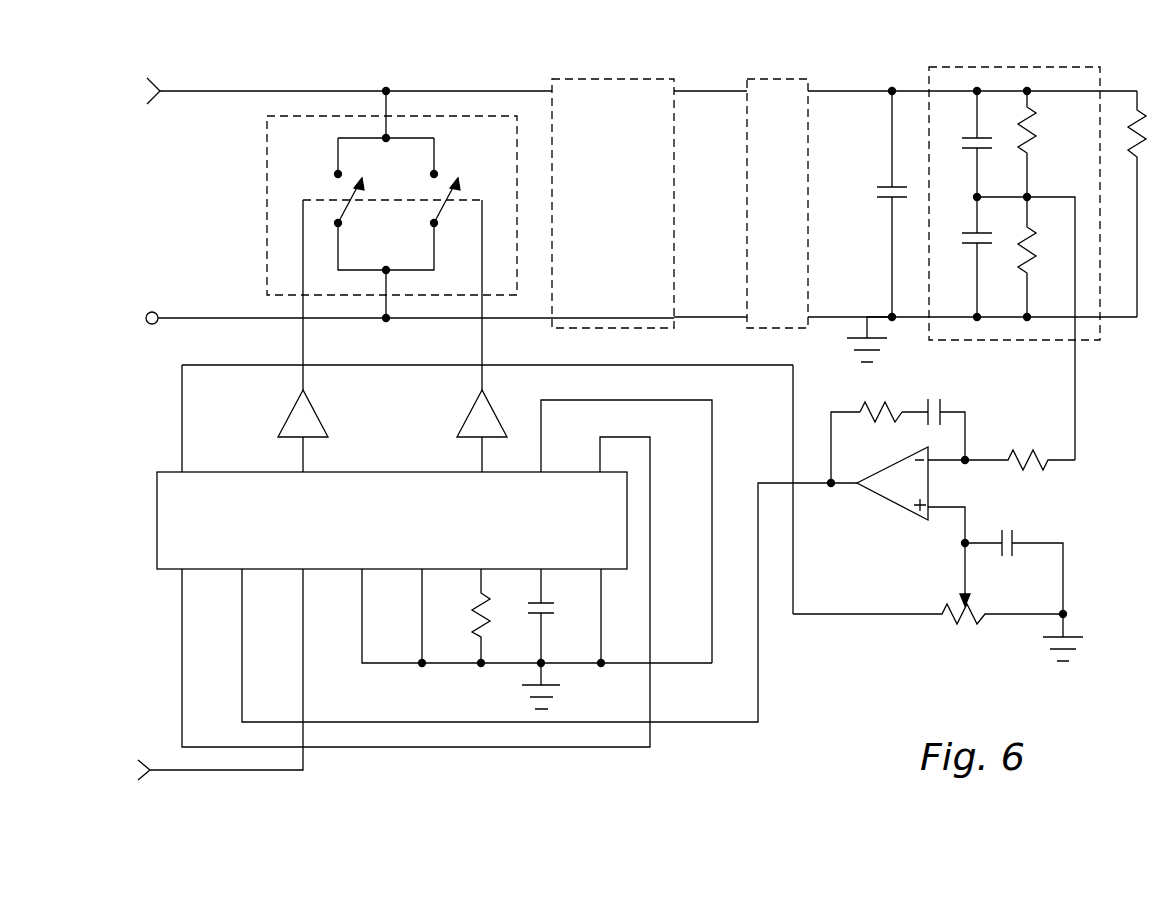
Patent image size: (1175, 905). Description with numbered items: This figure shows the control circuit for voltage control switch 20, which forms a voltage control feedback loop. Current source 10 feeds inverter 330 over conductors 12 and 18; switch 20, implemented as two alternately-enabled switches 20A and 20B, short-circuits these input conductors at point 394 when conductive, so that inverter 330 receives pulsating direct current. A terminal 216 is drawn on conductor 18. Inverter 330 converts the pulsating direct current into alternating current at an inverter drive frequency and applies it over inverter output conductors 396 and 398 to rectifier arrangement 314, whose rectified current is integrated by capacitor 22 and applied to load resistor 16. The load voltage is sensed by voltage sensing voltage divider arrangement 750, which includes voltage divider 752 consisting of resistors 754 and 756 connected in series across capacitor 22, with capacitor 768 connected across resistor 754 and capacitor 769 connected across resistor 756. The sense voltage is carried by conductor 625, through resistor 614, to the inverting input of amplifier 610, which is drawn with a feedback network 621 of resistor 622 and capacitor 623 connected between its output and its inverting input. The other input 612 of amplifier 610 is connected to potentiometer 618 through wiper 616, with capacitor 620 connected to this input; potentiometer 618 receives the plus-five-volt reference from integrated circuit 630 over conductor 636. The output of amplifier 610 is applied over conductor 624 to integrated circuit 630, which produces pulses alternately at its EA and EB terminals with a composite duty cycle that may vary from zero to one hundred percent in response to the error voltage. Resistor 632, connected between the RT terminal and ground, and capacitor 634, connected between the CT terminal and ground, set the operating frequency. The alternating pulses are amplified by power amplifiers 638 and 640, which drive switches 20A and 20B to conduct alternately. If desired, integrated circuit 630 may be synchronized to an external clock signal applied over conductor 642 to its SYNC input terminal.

The current source 10 is at (111, 102).
The conductor 12 is at (477, 91).
The load resistor 16 is at (1146, 140).
The conductor 18 is at (445, 320).
The voltage control switch 20 is at (478, 139).
The alternately-enabled switch 20A is at (348, 205).
The alternately-enabled switch 20B is at (446, 200).
The capacitor 22 is at (877, 190).
The terminal 216 is at (152, 312).
The rectifier arrangement 314 is at (762, 315).
The inverter 330 is at (598, 185).
The point 394 is at (386, 91).
The inverter output conductor 396 is at (708, 317).
The inverter output conductor 398 is at (710, 91).
The amplifier 610 is at (850, 453).
The non-inverting input 612 is at (896, 505).
The resistor 614 is at (1030, 450).
The wiper 616 is at (963, 568).
The potentiometer 618 is at (937, 655).
The capacitor 620 is at (1003, 528).
The feedback network 621 is at (895, 382).
The feedback resistor 622 is at (870, 405).
The feedback capacitor 623 is at (938, 400).
The amplifier output line 624 is at (758, 485).
The conductor 625 is at (1078, 392).
The integrated circuit 630 is at (430, 536).
The resistor 632 is at (473, 620).
The capacitor 634 is at (528, 610).
The conductor 636 is at (752, 367).
The power amplifier 638 is at (471, 410).
The power amplifier 640 is at (292, 410).
The conductor 642 is at (303, 770).
The voltage sensing voltage divider arrangement 750 is at (1100, 74).
The voltage divider 752 is at (1047, 170).
The resistor 754 is at (1040, 137).
The resistor 756 is at (1040, 255).
The capacitor 768 is at (962, 142).
The capacitor 769 is at (962, 238).